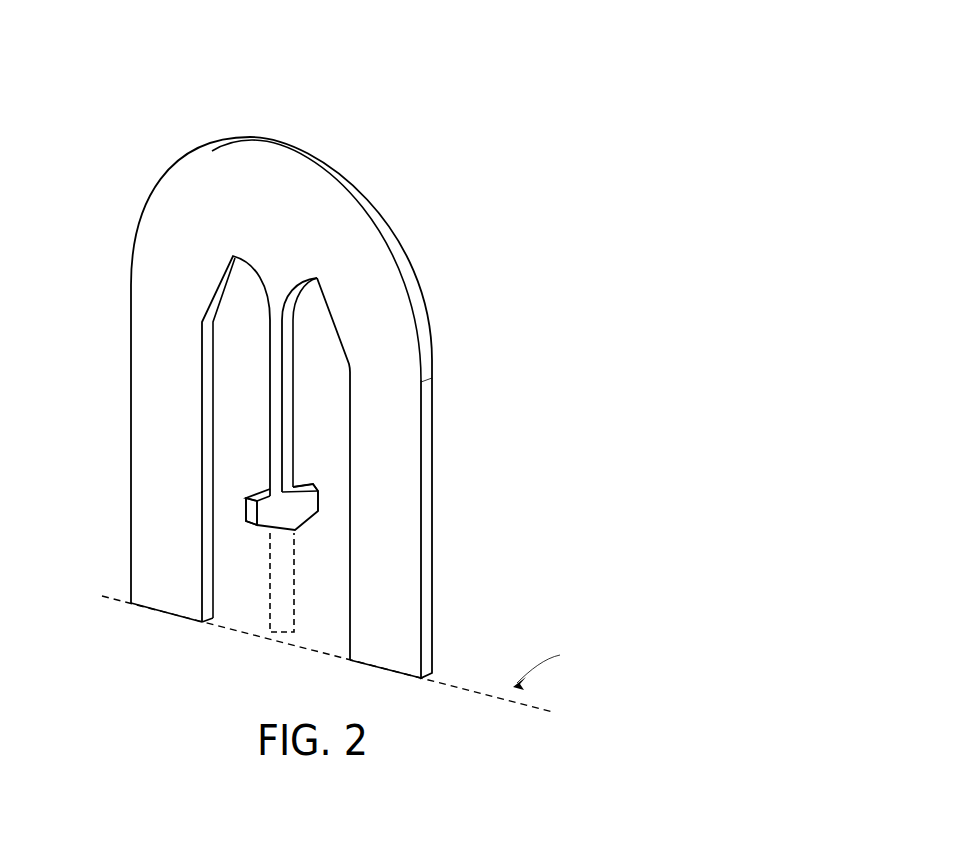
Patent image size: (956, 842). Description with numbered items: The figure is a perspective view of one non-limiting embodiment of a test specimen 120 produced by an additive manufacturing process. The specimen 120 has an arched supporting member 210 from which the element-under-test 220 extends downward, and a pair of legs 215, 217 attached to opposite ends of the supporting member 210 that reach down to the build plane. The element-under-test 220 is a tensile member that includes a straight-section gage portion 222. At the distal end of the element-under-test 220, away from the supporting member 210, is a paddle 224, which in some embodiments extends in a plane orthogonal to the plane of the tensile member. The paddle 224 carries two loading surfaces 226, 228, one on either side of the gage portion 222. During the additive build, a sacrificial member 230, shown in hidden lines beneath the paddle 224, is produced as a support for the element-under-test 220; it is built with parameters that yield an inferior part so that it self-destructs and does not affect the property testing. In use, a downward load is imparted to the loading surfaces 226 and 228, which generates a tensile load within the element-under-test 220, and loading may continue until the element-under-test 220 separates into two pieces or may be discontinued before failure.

The specimen 120 is at (468, 78).
The supporting member 210 is at (268, 162).
The leg 215 is at (150, 438).
The leg 217 is at (403, 590).
The element-under-test 220 is at (300, 348).
The straight-section gage portion 222 is at (273, 347).
The paddle 224 is at (288, 508).
The loading surface 226 is at (253, 491).
The loading surface 228 is at (300, 483).
The sacrificial member 230 is at (270, 617).